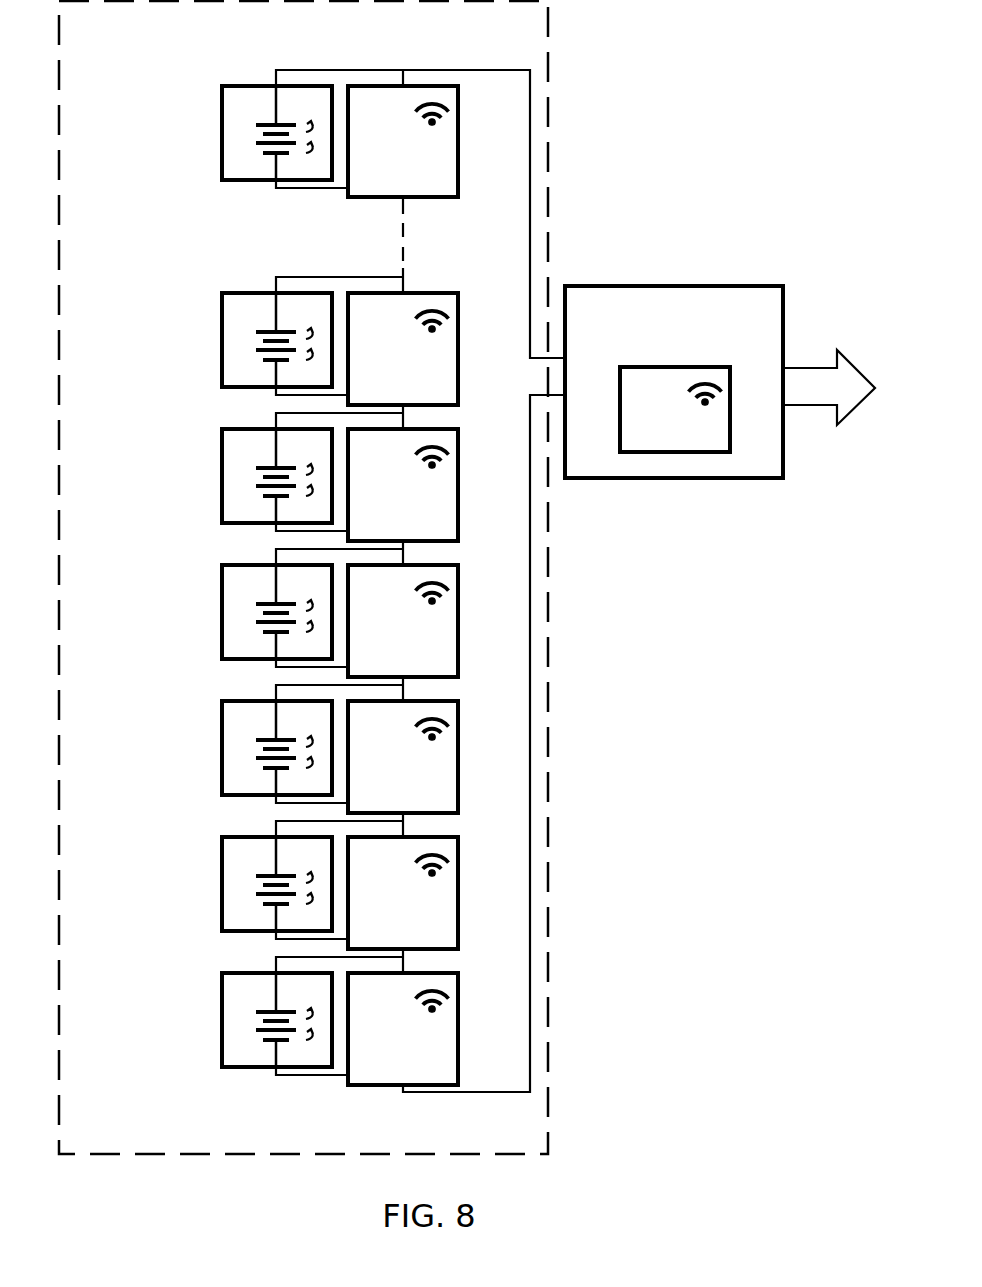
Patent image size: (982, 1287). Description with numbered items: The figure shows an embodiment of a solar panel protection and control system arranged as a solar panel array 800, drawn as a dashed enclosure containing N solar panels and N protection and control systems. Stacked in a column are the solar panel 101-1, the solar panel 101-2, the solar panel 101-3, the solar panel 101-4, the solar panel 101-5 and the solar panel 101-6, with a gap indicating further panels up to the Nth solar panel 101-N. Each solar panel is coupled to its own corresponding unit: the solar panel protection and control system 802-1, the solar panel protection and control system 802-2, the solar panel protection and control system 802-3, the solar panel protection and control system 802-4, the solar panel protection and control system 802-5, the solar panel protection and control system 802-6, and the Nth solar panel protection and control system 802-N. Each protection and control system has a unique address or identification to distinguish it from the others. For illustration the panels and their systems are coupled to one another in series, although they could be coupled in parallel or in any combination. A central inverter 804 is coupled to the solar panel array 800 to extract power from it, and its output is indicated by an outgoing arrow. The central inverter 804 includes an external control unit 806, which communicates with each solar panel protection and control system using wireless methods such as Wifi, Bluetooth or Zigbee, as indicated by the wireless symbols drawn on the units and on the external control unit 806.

The solar panel array 800 is at (137, 51).
The solar panel 101-N is at (213, 162).
The solar panel 101-6 is at (213, 378).
The solar panel 101-5 is at (208, 499).
The solar panel 101-4 is at (205, 625).
The solar panel 101-3 is at (212, 770).
The solar panel 101-2 is at (210, 900).
The solar panel 101-1 is at (215, 1047).
The solar panel protection and control system 802-N is at (436, 153).
The solar panel protection and control system 802-6 is at (374, 361).
The solar panel protection and control system 802-5 is at (374, 497).
The solar panel protection and control system 802-4 is at (374, 633).
The solar panel protection and control system 802-3 is at (374, 769).
The solar panel protection and control system 802-2 is at (374, 905).
The solar panel protection and control system 802-1 is at (374, 1041).
The central inverter 804 is at (692, 318).
The external control unit 806 is at (653, 434).